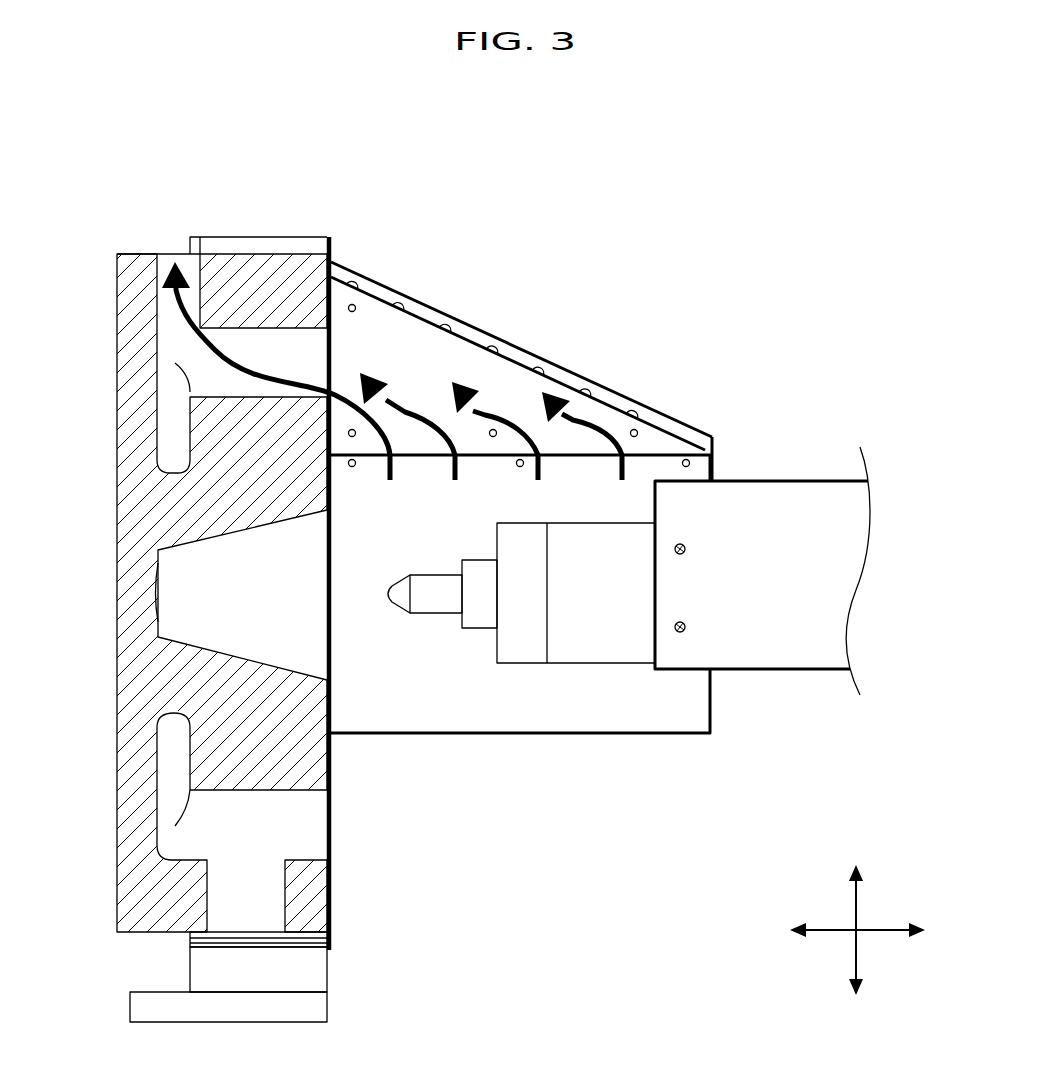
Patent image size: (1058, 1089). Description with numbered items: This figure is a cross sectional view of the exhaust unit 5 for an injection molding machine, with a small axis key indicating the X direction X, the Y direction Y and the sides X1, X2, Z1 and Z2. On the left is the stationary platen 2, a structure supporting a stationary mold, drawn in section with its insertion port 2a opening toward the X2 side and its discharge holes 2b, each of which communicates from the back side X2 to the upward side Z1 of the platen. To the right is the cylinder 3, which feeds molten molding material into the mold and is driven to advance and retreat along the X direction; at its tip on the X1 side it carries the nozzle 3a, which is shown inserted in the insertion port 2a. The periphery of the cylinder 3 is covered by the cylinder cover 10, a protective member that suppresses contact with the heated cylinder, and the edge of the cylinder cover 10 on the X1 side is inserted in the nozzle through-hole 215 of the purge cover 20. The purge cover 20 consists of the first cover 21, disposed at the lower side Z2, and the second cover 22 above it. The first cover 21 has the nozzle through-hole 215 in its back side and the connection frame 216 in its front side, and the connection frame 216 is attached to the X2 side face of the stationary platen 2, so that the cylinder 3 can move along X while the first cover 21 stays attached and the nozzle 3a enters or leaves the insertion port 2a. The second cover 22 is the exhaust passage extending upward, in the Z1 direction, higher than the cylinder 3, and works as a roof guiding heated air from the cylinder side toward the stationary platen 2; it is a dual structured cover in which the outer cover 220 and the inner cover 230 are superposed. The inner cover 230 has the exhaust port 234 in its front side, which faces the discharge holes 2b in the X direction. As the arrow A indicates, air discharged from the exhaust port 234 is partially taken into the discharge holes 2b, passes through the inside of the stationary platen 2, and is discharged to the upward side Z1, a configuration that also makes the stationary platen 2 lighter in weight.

The exhaust unit 5 is at (198, 156).
The stationary platen 2 is at (221, 247).
The insertion port 2a is at (287, 568).
The discharge hole 2b is at (268, 352).
The purge cover 20 is at (622, 262).
The second cover 22 is at (718, 302).
The outer cover 220 is at (523, 343).
The inner cover 230 is at (569, 384).
The exhaust port 234 is at (338, 355).
The nozzle through-hole 215 is at (722, 475).
The connection frame 216 is at (338, 692).
The first cover 21 is at (715, 715).
The cylinder cover 10 is at (825, 472).
The cylinder 3 is at (588, 662).
The nozzle 3a is at (430, 612).
The arrow A is at (195, 343).
The X direction X is at (865, 935).
The Y direction Y is at (858, 903).
The X1 side X1 is at (768, 930).
The X2 side X2 is at (940, 930).
The Z1 side Z1 is at (855, 852).
The Z2 side Z2 is at (855, 1015).